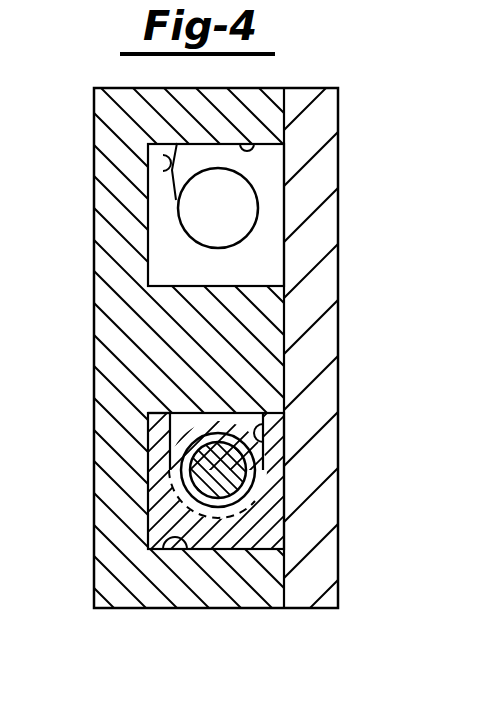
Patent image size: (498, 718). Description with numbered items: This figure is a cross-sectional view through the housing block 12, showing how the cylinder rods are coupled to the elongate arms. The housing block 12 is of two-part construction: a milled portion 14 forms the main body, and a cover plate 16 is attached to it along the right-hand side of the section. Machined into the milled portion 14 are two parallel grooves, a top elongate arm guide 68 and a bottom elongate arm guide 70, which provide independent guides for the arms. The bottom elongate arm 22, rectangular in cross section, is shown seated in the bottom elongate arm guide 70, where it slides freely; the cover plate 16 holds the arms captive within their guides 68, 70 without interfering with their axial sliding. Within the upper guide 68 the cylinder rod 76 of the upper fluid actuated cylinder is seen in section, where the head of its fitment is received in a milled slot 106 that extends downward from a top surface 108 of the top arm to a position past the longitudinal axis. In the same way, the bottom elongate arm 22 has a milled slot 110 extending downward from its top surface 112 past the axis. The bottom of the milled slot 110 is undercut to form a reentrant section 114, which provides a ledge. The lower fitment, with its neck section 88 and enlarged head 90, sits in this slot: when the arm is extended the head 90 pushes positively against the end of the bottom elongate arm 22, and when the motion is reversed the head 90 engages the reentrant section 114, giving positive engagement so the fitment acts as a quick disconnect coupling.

The housing block 12 is at (240, 88).
The milled portion 14 is at (94, 207).
The cover plate 16 is at (338, 158).
The bottom elongate arm 22 is at (200, 515).
The top elongate arm guide 68 is at (250, 147).
The bottom elongate arm guide 70 is at (185, 551).
The cylinder rod 76 is at (249, 232).
The neck section 88 is at (185, 459).
The head 90 is at (256, 462).
The milled slot 106 is at (163, 171).
The top surface 108 is at (177, 143).
The milled slot 110 is at (267, 440).
The top surface 112 is at (162, 412).
The reentrant section 114 is at (240, 519).